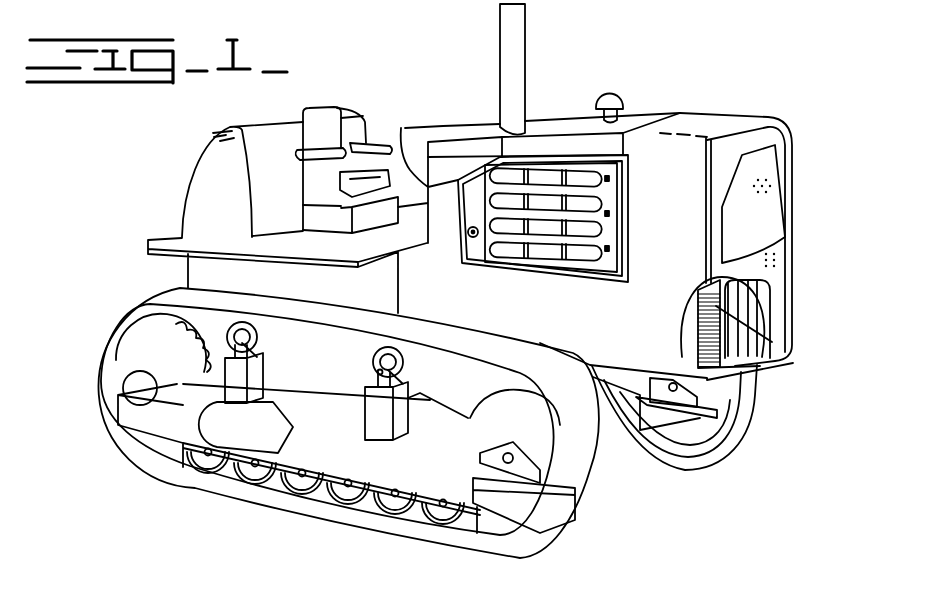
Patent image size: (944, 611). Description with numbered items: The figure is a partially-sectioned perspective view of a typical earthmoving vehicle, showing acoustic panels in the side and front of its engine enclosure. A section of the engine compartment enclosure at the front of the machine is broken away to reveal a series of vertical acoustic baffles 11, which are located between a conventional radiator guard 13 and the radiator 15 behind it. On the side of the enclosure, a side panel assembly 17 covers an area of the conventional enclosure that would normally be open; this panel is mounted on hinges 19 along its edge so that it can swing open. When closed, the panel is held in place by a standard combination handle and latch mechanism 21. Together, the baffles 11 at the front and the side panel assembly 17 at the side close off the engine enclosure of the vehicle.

The vertical acoustic baffles 11 is at (762, 353).
The radiator guard 13 is at (778, 254).
The radiator 15 is at (700, 342).
The side panel assembly 17 is at (633, 180).
The hinges 19 is at (610, 249).
The combination handle and latch mechanism 21 is at (473, 238).